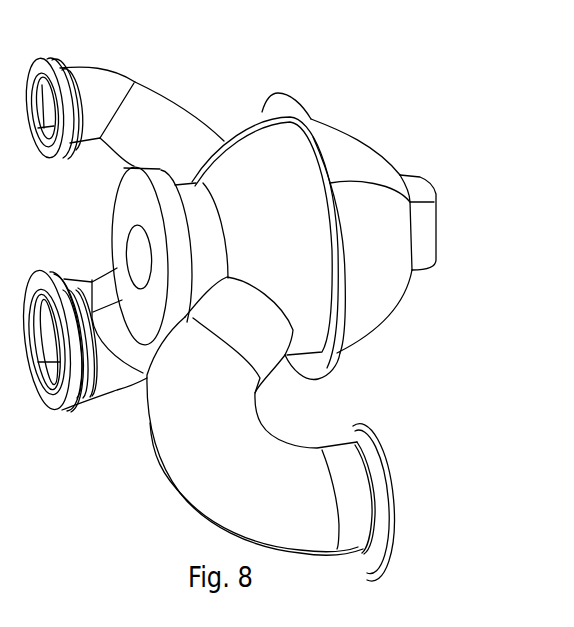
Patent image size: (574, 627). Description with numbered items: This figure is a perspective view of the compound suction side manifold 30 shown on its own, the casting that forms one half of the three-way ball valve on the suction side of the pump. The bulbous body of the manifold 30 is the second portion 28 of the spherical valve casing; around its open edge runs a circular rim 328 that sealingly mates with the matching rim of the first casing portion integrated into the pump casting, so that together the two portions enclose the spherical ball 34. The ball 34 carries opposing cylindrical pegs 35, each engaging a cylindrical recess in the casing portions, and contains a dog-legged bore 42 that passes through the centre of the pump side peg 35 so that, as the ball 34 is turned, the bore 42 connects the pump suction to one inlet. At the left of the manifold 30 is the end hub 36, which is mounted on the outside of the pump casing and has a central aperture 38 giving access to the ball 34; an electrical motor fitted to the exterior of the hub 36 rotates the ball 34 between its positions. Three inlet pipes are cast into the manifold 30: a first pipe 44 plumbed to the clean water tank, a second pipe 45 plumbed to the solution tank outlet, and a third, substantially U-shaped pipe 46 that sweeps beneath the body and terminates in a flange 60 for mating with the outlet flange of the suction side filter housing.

The suction side manifold 30 is at (222, 68).
The second portion 28 is at (278, 150).
The spherical ball 34 is at (375, 160).
The cylindrical peg 35 is at (424, 181).
The bore 42 is at (458, 211).
The rim flange 328 is at (334, 348).
The end hub 36 is at (117, 207).
The central aperture 38 is at (138, 257).
The first inlet pipe 44 is at (106, 78).
The second inlet pipe 45 is at (105, 387).
The third U-shaped pipe 46 is at (310, 532).
The flange 60 is at (366, 550).